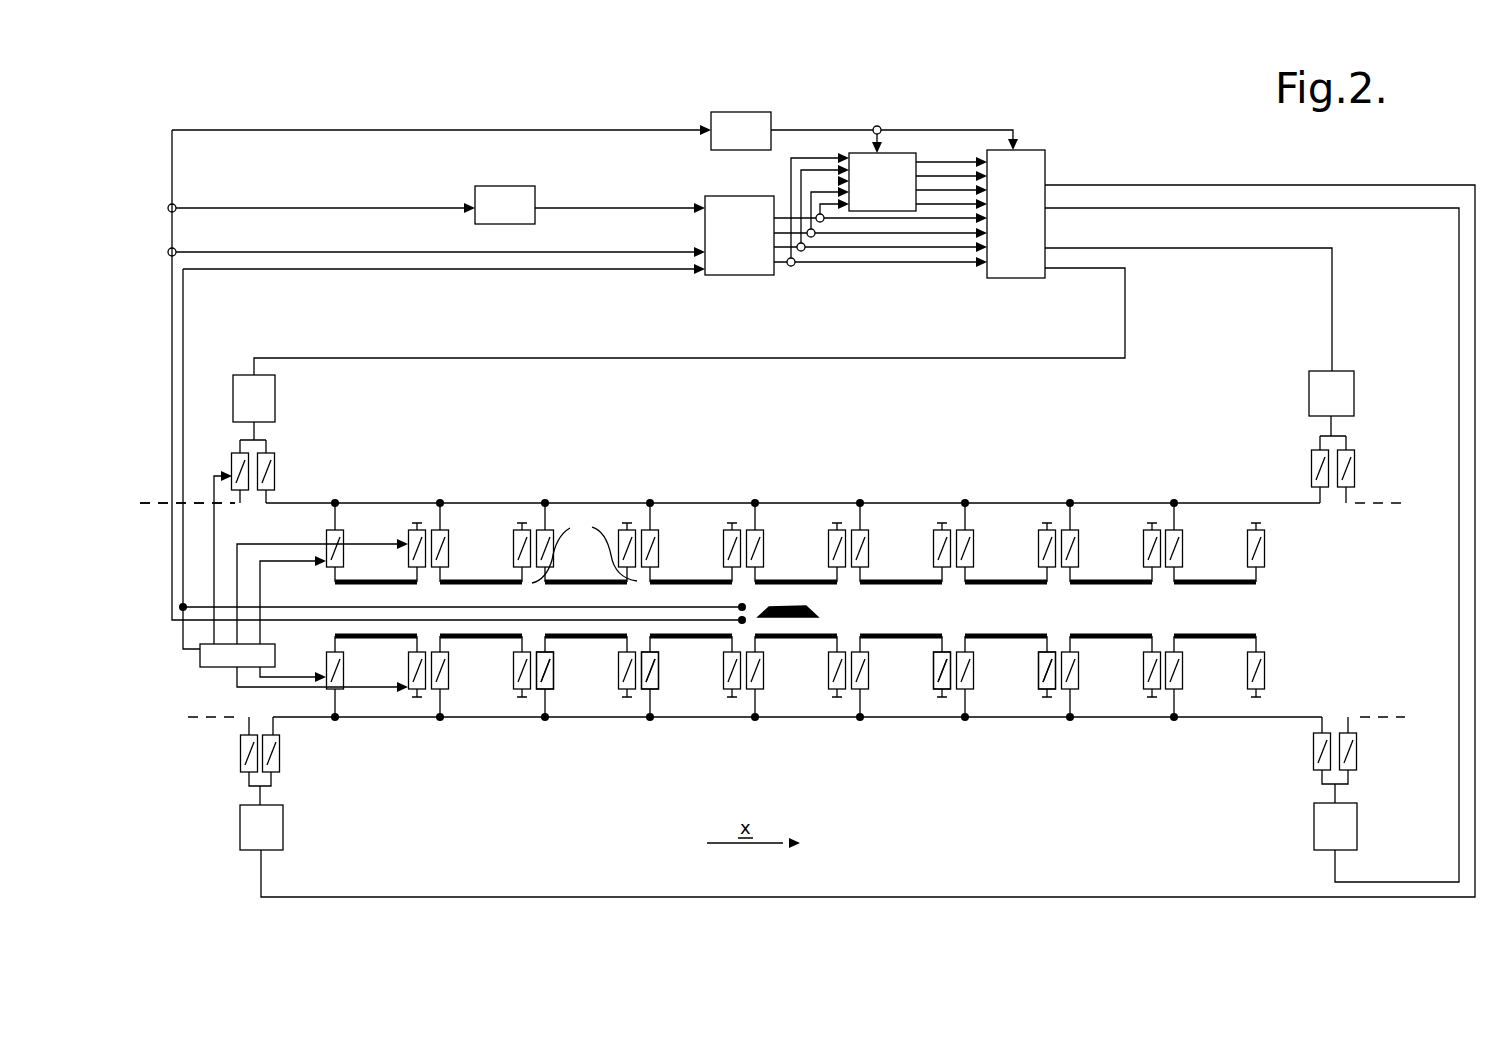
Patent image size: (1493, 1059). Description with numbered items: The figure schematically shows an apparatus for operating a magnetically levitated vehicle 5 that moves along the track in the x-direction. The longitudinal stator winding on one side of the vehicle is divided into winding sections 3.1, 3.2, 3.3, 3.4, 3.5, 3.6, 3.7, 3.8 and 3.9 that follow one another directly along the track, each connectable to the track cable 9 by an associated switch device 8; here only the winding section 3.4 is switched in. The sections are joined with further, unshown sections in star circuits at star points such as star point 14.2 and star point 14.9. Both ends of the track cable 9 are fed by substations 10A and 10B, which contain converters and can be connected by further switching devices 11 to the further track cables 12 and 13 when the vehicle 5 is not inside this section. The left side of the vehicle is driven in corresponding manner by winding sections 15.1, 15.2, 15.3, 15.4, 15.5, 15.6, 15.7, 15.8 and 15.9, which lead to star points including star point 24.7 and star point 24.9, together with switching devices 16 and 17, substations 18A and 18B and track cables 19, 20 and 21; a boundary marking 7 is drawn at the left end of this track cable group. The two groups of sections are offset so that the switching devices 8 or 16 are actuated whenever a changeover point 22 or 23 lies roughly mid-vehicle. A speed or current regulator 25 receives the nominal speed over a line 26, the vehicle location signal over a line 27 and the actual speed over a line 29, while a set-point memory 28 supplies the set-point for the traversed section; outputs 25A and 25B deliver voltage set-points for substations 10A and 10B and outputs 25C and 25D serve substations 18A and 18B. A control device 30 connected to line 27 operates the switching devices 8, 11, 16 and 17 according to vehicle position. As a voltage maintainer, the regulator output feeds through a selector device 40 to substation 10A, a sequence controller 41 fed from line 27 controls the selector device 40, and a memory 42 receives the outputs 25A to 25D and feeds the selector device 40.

The winding section 3.1 is at (385, 638).
The winding section 3.2 is at (482, 715).
The winding section 3.3 is at (595, 638).
The winding section 3.4 is at (700, 638).
The winding section 3.5 is at (805, 638).
The winding section 3.6 is at (910, 638).
The winding section 3.7 is at (1015, 638).
The winding section 3.8 is at (1120, 638).
The winding section 3.9 is at (1263, 678).
The vehicle 5 is at (818, 611).
The feed line boundary 7 is at (185, 506).
The switch devices 8 is at (648, 690).
The track cable 9 is at (1048, 720).
The substation 10A is at (283, 830).
The substation 10B is at (1357, 831).
The switching devices 11 is at (255, 748).
The track cable 12 is at (213, 722).
The track cable 13 is at (1375, 714).
The star point 14.2 is at (523, 699).
The star point 14.9 is at (1262, 698).
The winding section 15.1 is at (373, 569).
The winding section 15.2 is at (478, 569).
The winding section 15.3 is at (583, 569).
The winding section 15.4 is at (688, 569).
The winding section 15.5 is at (800, 502).
The winding section 15.6 is at (898, 569).
The winding section 15.7 is at (1032, 501).
The winding section 15.8 is at (1108, 569).
The winding section 15.9 is at (1264, 540).
The switching devices 16 is at (853, 530).
The switching devices 17 is at (273, 460).
The substation 18A is at (275, 397).
The substation 18B is at (1354, 395).
The track cable 19 is at (181, 530).
The track cable 20 is at (478, 500).
The track cable 21 is at (1375, 502).
The changeover point 22 is at (1060, 625).
The changeover point 23 is at (584, 548).
The star point 24.7 is at (1046, 524).
The star point 24.9 is at (1262, 524).
The speed or current regulator 25 is at (712, 193).
The output 25A is at (920, 220).
The output 25B is at (878, 235).
The output 25C is at (840, 249).
The output 25D is at (795, 264).
The line 26 is at (637, 205).
The line 27 is at (184, 373).
The set-point memory 28 is at (537, 192).
The line 29 is at (170, 395).
The control device 30 is at (198, 653).
The selector device 40 is at (1045, 170).
The sequence controller 41 is at (747, 110).
The memory 42 is at (847, 152).